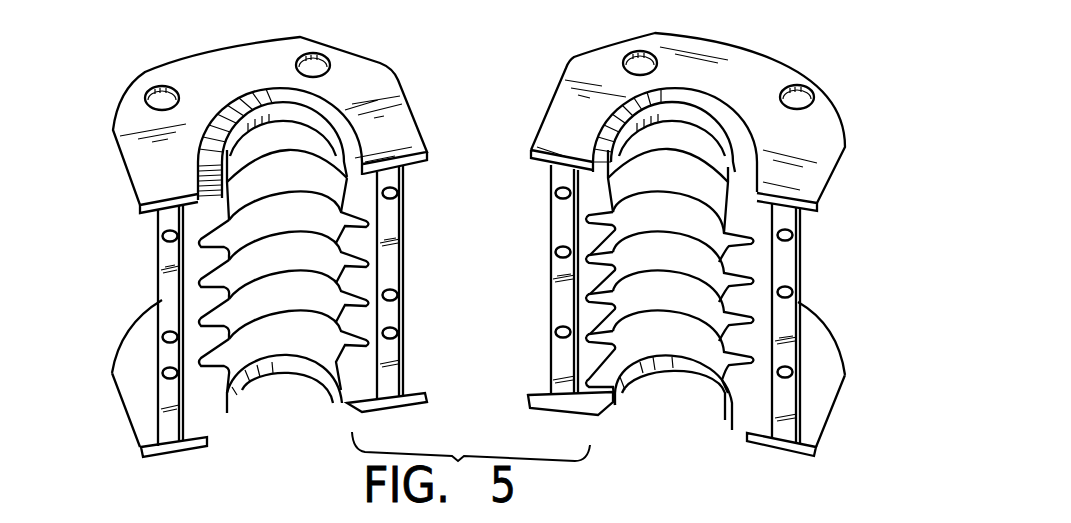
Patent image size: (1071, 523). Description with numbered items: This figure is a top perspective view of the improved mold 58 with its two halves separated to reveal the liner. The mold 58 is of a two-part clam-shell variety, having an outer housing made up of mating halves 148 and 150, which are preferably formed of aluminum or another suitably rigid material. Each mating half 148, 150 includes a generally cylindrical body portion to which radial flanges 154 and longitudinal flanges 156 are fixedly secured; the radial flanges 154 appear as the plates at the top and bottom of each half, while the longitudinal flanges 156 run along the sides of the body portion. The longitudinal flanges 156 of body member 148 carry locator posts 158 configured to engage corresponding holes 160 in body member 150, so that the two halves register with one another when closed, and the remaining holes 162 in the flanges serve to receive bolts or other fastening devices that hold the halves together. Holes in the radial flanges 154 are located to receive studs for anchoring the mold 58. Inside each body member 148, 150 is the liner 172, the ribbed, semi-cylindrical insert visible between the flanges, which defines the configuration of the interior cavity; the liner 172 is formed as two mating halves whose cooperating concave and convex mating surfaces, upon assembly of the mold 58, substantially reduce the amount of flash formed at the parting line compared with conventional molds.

The mold 58 is at (770, 455).
The mating half 148 is at (178, 453).
The mating half 150 is at (586, 408).
The radial flange 154 is at (371, 60).
The longitudinal flange 156 is at (167, 312).
The locator post 158 is at (162, 236).
The hole 160 is at (558, 337).
The hole 162 is at (165, 373).
The liner 172 is at (333, 383).